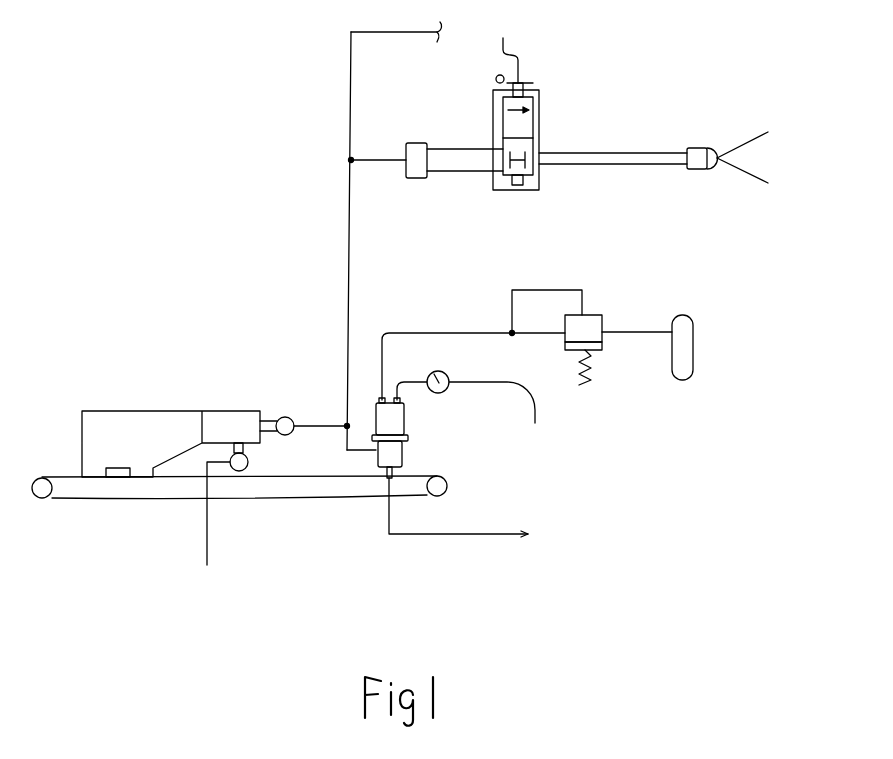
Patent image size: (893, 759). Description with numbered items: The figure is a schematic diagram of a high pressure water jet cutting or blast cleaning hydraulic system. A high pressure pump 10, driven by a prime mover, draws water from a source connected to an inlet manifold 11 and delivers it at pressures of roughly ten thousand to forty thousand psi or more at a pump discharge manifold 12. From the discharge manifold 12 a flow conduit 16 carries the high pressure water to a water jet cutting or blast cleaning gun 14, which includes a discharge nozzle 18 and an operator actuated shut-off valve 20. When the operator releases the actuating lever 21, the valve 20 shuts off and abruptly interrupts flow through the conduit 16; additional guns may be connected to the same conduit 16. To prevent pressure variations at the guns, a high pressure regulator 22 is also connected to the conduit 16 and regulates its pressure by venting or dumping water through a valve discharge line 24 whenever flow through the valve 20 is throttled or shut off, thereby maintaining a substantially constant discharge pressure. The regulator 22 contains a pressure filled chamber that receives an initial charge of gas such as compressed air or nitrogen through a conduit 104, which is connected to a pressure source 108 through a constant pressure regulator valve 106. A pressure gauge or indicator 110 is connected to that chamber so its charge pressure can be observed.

The high pressure pump 10 is at (138, 411).
The inlet manifold 11 is at (248, 462).
The pump discharge manifold 12 is at (282, 417).
The high pressure water jet cutting or blast cleaning gun 14 is at (608, 153).
The flow conduit 16 is at (351, 262).
The discharge nozzle 18 is at (706, 148).
The operator actuated shut-off valve 20 is at (541, 97).
The actuating lever 21 is at (500, 47).
The high pressure regulator 22 is at (407, 417).
The valve discharge line 24 is at (457, 534).
The conduit 104 is at (477, 333).
The constant pressure regulator valve 106 is at (603, 313).
The pressure source 108 is at (693, 347).
The pressure gauge or indicator 110 is at (478, 413).